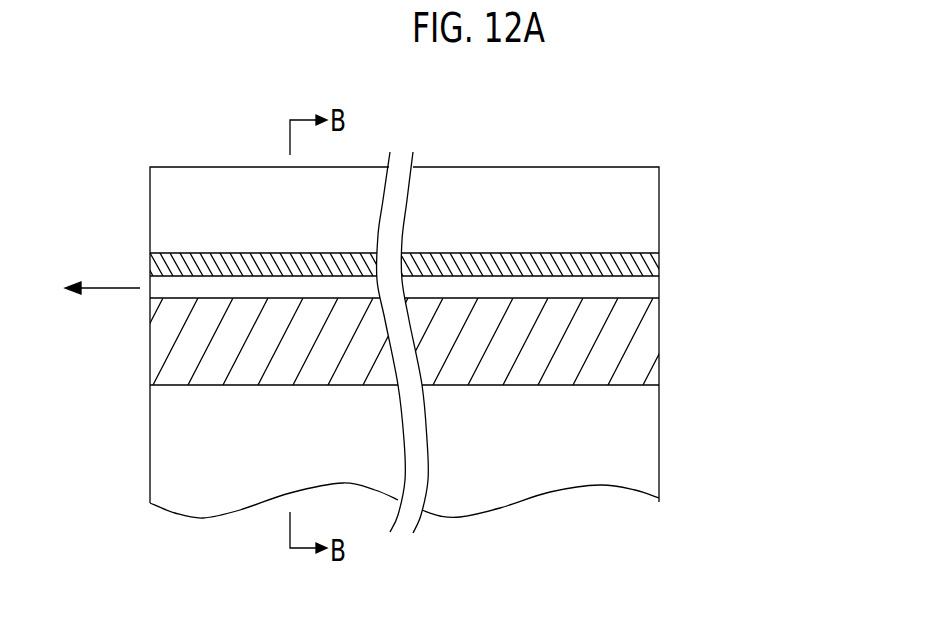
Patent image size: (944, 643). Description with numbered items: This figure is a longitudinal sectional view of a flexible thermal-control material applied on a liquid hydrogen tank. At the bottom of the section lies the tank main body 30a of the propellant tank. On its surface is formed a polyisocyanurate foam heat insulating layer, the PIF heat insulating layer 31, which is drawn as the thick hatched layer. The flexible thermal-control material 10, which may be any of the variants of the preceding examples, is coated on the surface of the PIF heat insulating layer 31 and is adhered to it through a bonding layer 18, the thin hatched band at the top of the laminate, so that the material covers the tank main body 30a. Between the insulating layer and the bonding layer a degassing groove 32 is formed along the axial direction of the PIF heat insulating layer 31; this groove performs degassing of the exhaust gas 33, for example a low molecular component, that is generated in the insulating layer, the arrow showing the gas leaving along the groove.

The flexible thermal-control material 10 is at (650, 195).
The bonding layer 18 is at (650, 265).
The degassing groove 32 is at (648, 288).
The PIF heat insulating layer 31 is at (650, 337).
The tank main body 30a is at (660, 437).
The exhaust gas 33 is at (103, 288).